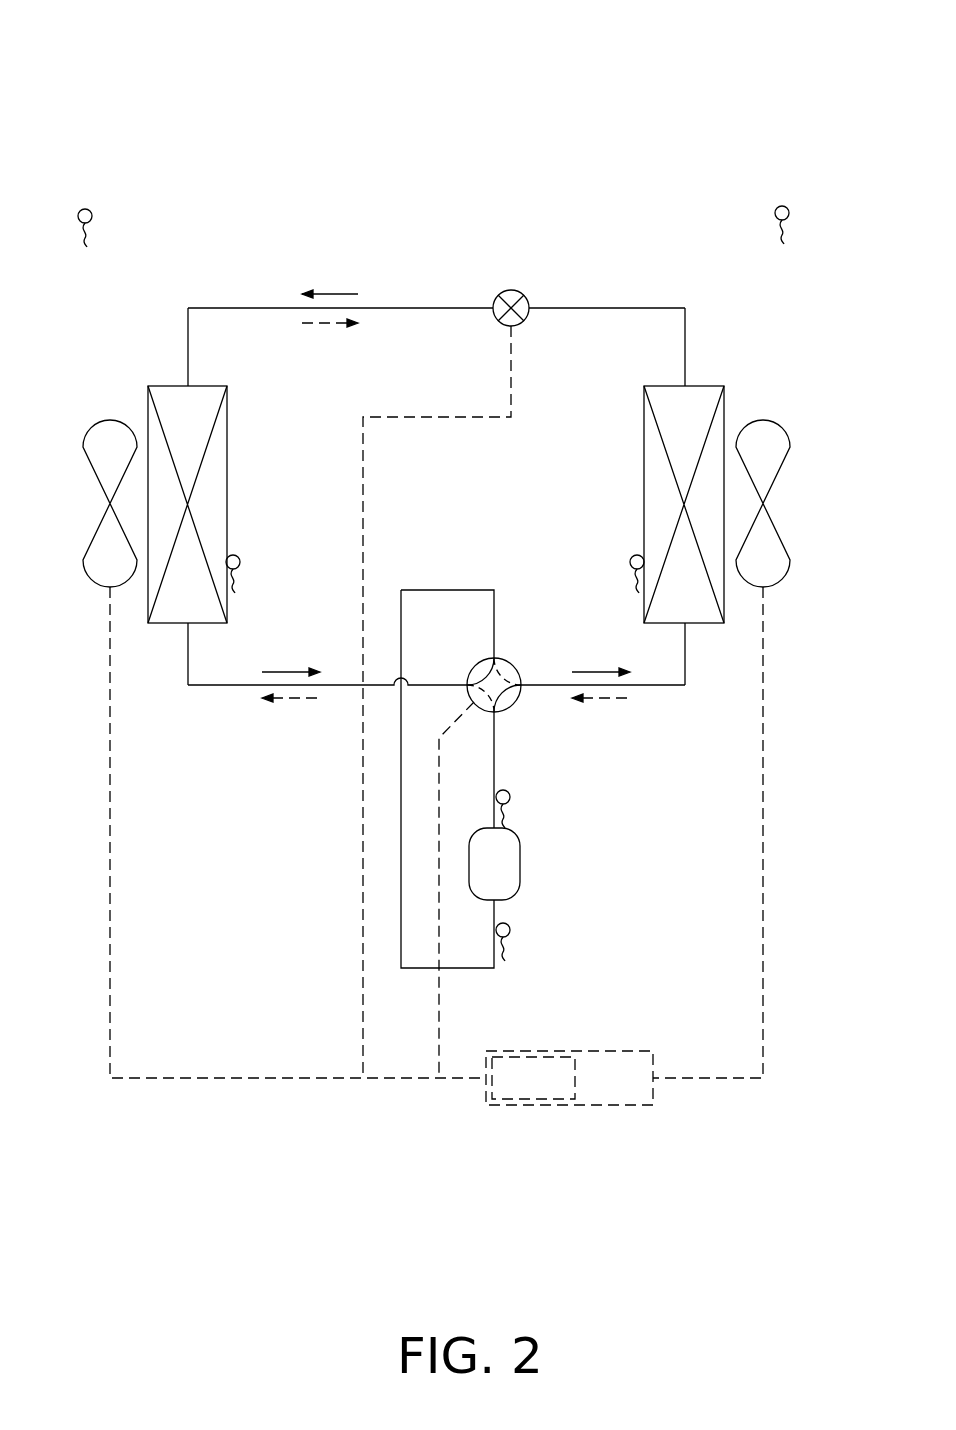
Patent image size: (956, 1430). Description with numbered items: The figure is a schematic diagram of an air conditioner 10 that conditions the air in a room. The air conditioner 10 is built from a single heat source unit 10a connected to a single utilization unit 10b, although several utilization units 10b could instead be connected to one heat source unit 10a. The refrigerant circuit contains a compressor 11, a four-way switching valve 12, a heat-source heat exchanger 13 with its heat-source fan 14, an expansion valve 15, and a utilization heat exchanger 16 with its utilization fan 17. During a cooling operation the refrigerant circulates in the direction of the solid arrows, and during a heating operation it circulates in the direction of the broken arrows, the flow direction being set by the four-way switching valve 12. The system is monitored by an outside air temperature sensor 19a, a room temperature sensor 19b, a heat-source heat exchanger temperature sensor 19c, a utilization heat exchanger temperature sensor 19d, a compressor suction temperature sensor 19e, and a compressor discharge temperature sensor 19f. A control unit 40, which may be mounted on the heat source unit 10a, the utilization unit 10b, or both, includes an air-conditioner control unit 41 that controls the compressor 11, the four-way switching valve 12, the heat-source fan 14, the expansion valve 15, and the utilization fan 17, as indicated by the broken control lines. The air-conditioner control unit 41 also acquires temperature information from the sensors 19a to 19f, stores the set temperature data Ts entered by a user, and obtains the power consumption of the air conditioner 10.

The air conditioner 10 is at (168, 72).
The heat source unit 10a is at (826, 212).
The utilization unit 10b is at (272, 212).
The compressor 11 is at (520, 864).
The four-way switching valve 12 is at (511, 660).
The heat-source heat exchanger 13 is at (644, 480).
The heat-source fan 14 is at (760, 418).
The expansion valve 15 is at (513, 290).
The utilization heat exchanger 16 is at (227, 477).
The utilization fan 17 is at (105, 418).
The outside air temperature sensor 19a is at (775, 214).
The room temperature sensor 19b is at (135, 270).
The heat-source heat exchanger temperature sensor 19c is at (630, 563).
The utilization heat exchanger temperature sensor 19d is at (284, 556).
The compressor suction temperature sensor 19e is at (510, 929).
The compressor discharge temperature sensor 19f is at (510, 796).
The air-conditioner control unit 41 is at (570, 1050).
The control unit 40 is at (569, 1078).